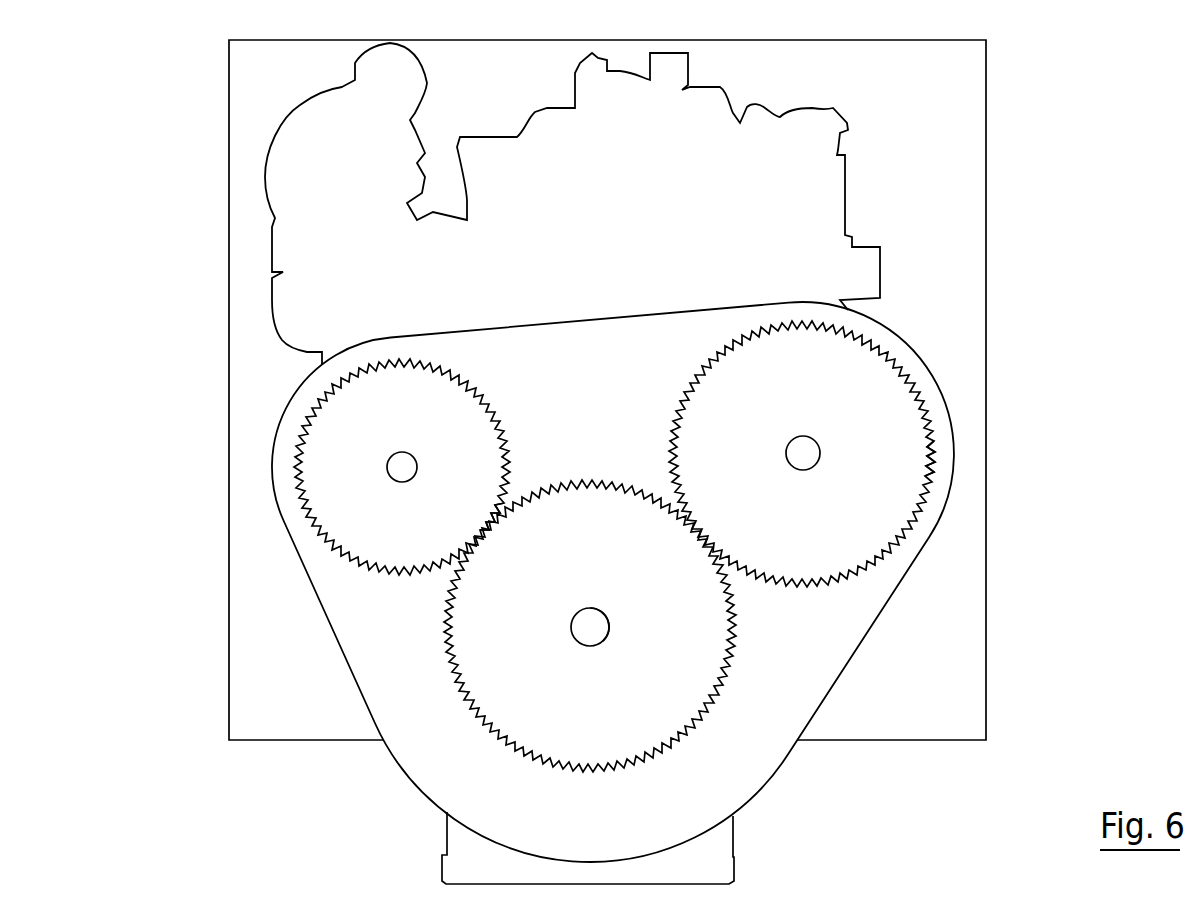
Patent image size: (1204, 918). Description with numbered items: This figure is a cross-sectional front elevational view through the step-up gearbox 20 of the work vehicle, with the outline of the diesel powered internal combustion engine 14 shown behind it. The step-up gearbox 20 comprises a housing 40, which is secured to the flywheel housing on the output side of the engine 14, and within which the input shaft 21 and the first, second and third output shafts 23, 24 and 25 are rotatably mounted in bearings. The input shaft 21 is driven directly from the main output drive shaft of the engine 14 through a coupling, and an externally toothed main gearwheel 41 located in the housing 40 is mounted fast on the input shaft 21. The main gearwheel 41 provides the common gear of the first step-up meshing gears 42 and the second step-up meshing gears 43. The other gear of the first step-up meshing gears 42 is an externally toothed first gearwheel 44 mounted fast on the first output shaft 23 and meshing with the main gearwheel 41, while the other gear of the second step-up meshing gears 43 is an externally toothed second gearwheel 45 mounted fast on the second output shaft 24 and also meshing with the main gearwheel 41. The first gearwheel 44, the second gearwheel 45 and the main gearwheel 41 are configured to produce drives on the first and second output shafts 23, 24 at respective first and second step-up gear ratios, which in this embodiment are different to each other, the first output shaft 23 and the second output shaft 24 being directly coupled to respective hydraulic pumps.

The internal combustion engine 14 is at (833, 193).
The step-up gearbox 20 is at (609, 562).
The input shaft 21 is at (587, 626).
The first output shaft 23 is at (398, 467).
The second output shaft 24 is at (810, 447).
The third output shaft 25 is at (597, 633).
The housing 40 is at (777, 772).
The main gearwheel 41 is at (735, 640).
The first step-up meshing gears 42 is at (303, 408).
The second step-up meshing gears 43 is at (883, 347).
The first gearwheel 44 is at (495, 412).
The second gearwheel 45 is at (933, 460).